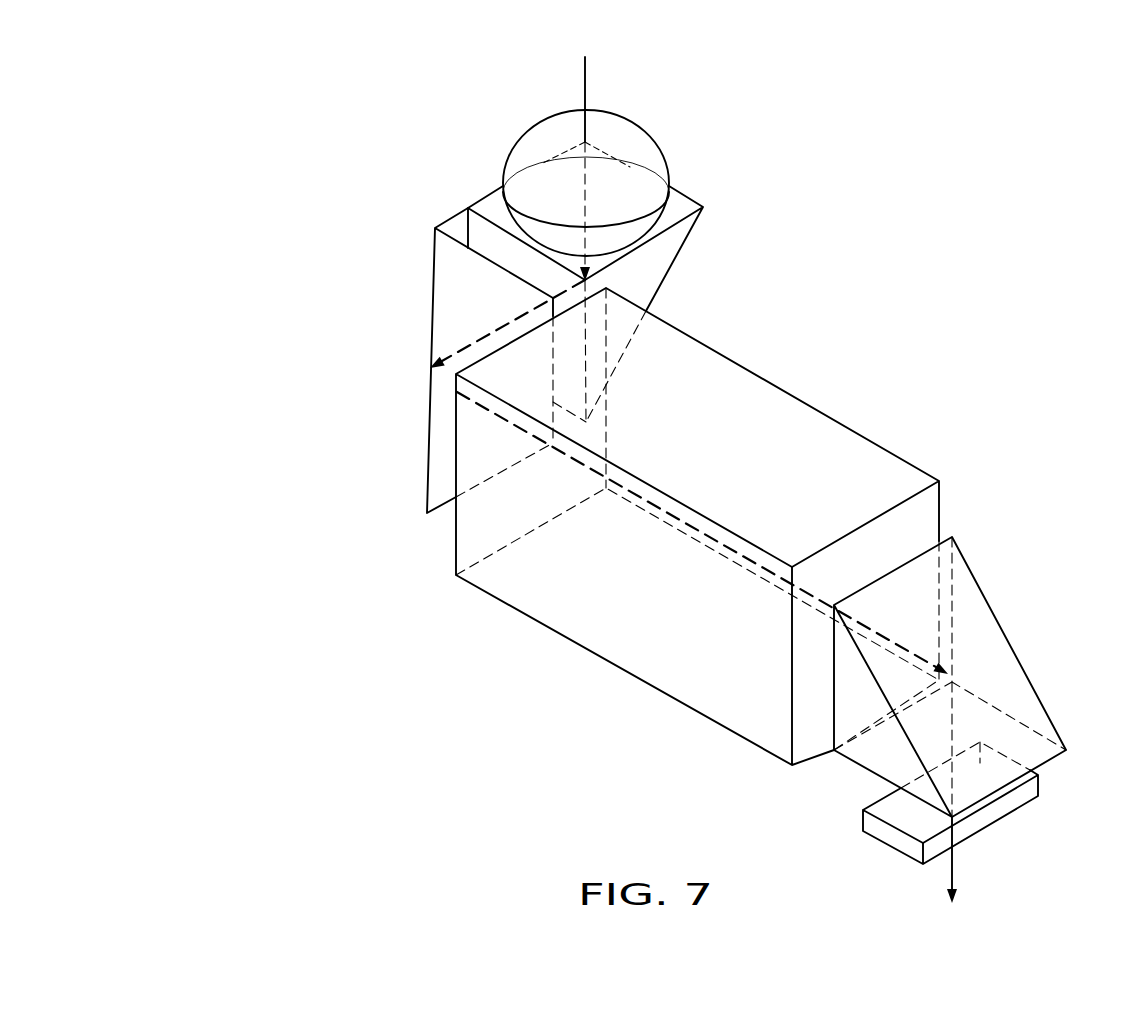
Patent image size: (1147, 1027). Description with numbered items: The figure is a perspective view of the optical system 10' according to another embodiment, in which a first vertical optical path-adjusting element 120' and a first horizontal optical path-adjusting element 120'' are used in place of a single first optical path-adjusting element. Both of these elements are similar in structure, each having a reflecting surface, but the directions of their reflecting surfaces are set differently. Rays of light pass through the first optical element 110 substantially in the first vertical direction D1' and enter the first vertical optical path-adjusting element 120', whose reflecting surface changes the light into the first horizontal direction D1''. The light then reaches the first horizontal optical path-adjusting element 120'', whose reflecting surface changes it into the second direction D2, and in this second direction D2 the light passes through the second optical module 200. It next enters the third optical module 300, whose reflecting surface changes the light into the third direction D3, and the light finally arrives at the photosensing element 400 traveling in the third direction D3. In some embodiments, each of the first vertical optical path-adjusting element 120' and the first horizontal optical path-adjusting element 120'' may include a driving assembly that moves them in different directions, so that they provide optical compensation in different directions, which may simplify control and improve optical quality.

The optical system 10' is at (601, 481).
The first optical element 110 is at (535, 142).
The first vertical optical path-adjusting element 120' is at (534, 276).
The first horizontal optical path-adjusting element 120'' is at (436, 360).
The second optical module 200 is at (555, 600).
The third optical module 300 is at (983, 633).
The photosensing element 400 is at (1005, 807).
The first vertical direction D1' is at (586, 222).
The first horizontal direction D1'' is at (431, 324).
The second direction D2 is at (653, 491).
The third direction D3 is at (953, 811).